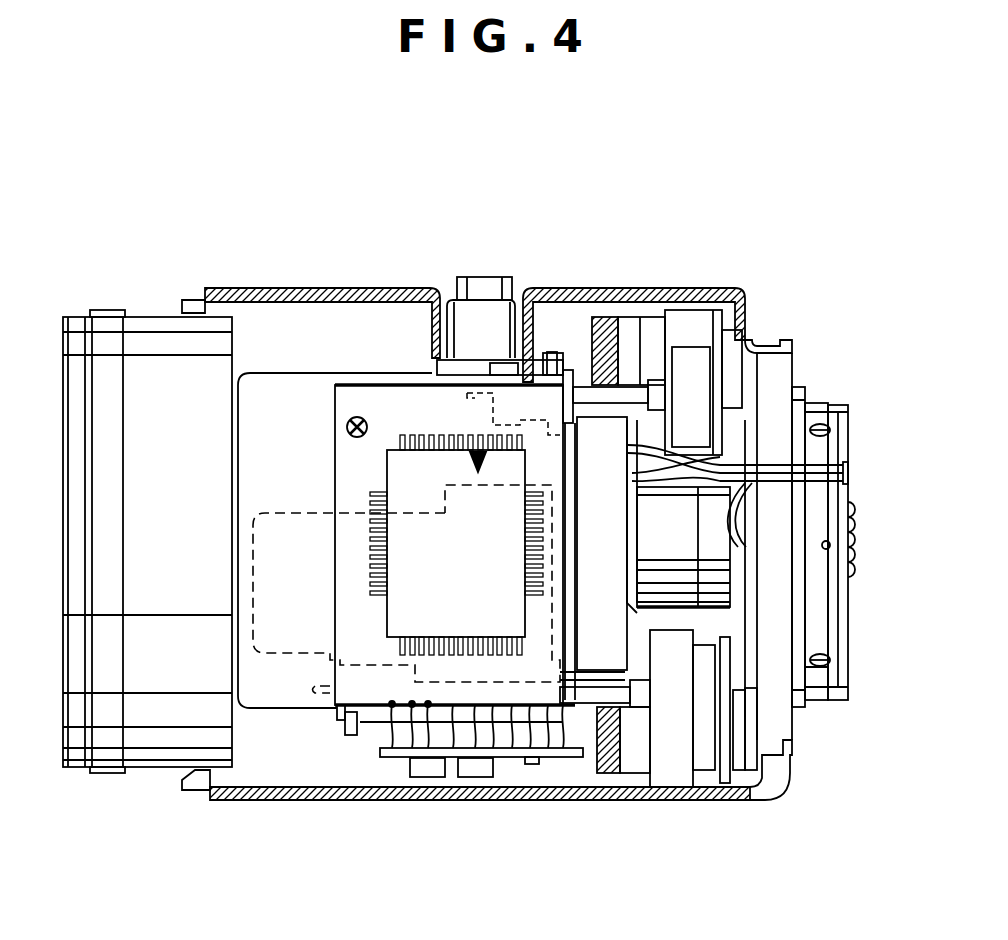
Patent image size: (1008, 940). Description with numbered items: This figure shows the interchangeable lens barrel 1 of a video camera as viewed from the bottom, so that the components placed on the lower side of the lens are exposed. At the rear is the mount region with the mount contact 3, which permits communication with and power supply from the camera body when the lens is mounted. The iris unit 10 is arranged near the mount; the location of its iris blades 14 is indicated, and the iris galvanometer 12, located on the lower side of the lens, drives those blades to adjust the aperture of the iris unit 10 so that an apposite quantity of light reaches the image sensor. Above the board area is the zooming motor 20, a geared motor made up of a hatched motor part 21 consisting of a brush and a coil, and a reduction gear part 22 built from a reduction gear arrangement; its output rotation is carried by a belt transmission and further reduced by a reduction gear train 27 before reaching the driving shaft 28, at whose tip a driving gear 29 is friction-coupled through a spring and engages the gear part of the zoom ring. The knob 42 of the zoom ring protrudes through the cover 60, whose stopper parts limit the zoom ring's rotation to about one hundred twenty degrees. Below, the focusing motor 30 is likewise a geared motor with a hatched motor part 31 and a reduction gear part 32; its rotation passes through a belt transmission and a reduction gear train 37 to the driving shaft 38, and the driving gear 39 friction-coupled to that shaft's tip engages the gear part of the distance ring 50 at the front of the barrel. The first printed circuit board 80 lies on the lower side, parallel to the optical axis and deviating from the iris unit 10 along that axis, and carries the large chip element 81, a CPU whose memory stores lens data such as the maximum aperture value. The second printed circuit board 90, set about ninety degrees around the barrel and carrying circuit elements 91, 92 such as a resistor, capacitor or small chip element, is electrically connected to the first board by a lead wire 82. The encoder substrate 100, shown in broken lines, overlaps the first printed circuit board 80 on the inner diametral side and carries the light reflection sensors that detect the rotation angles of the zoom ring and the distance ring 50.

The interchangeable lens barrel 1 is at (838, 437).
The mount contact 3 is at (830, 540).
The iris unit 10 is at (627, 575).
The iris galvanometer 12 is at (668, 548).
The iris blades 14 is at (607, 503).
The zooming motor 20 is at (628, 372).
The motor part 21 is at (597, 317).
The reduction gear part 22 is at (665, 345).
The reduction gear train 27 is at (686, 380).
The driving shaft 28 is at (633, 390).
The driving gear 29 is at (497, 363).
The focusing motor 30 is at (630, 772).
The motor part 31 is at (607, 772).
The reduction gear part 32 is at (635, 772).
The reduction gear train 37 is at (670, 713).
The driving shaft 38 is at (557, 765).
The driving gear 39 is at (353, 738).
The knob 42 is at (467, 315).
The distance ring 50 is at (150, 380).
The cover 60 is at (548, 290).
The first printed circuit board 80 is at (373, 405).
The large chip element 81 is at (415, 478).
The lead wire 82 is at (378, 760).
The second printed circuit board 90 is at (510, 758).
The circuit element 91 is at (432, 770).
The circuit element 92 is at (475, 770).
The encoder substrate 100 is at (278, 513).